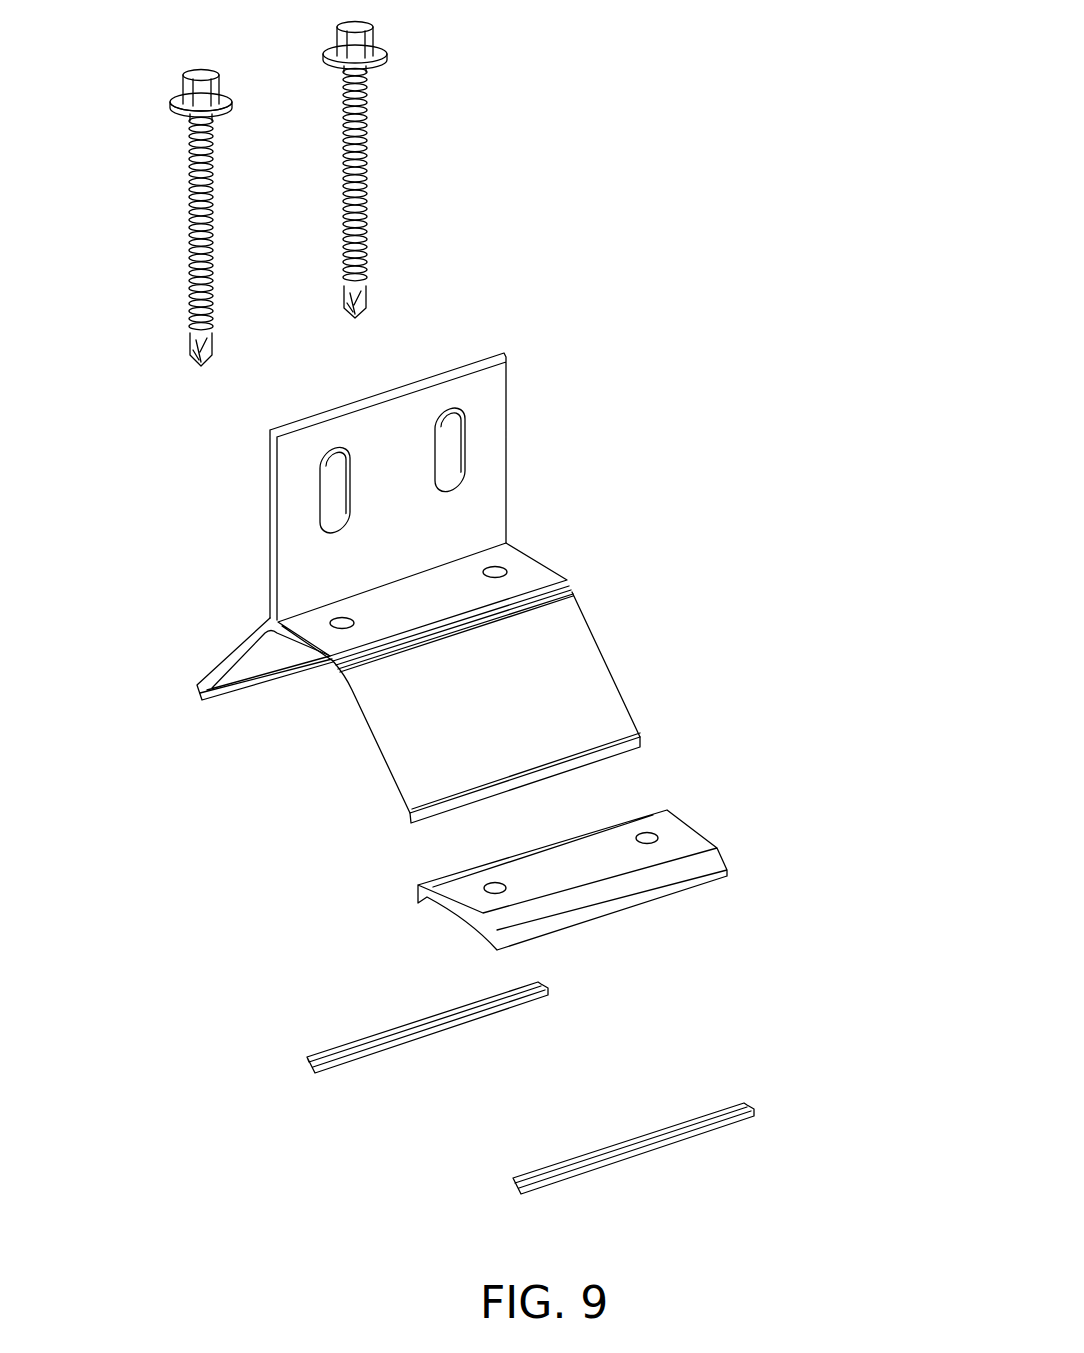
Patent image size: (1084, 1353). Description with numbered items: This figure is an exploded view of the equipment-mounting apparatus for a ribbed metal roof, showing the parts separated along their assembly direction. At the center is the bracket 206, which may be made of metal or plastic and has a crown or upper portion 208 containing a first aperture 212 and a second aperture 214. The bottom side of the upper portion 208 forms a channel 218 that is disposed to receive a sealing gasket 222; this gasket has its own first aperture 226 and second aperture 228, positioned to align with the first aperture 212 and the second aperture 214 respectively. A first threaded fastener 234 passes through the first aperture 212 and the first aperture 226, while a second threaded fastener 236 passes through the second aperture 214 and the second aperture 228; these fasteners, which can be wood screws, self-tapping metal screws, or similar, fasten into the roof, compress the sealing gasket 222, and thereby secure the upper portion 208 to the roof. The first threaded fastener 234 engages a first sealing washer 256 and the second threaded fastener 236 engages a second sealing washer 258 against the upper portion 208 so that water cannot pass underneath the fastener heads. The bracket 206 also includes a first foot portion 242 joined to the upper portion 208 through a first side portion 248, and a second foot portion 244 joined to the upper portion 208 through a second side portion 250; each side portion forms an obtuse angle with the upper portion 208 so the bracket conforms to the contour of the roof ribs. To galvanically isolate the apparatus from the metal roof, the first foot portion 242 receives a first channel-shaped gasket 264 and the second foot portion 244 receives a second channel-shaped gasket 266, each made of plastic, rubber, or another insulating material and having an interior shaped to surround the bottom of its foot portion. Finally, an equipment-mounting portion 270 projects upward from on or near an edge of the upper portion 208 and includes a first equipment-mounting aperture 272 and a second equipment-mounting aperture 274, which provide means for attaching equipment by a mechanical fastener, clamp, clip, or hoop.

The bracket 206 is at (556, 418).
The upper portion 208 is at (545, 563).
The first aperture 212 is at (342, 617).
The second aperture 214 is at (493, 567).
The channel 218 is at (327, 664).
The sealing gasket 222 is at (720, 848).
The first aperture 226 is at (496, 880).
The second aperture 228 is at (646, 829).
The first threaded fastener 234 is at (250, 218).
The second threaded fastener 236 is at (405, 170).
The first foot portion 242 is at (259, 683).
The second foot portion 244 is at (406, 813).
The first side portion 248 is at (238, 637).
The second side portion 250 is at (603, 661).
The first sealing washer 256 is at (232, 108).
The second sealing washer 258 is at (386, 55).
The first channel-shaped gasket 264 is at (548, 988).
The second channel-shaped gasket 266 is at (755, 1112).
The equipment-mounting portion 270 is at (272, 515).
The first equipment-mounting aperture 272 is at (333, 448).
The second equipment-mounting aperture 274 is at (447, 410).